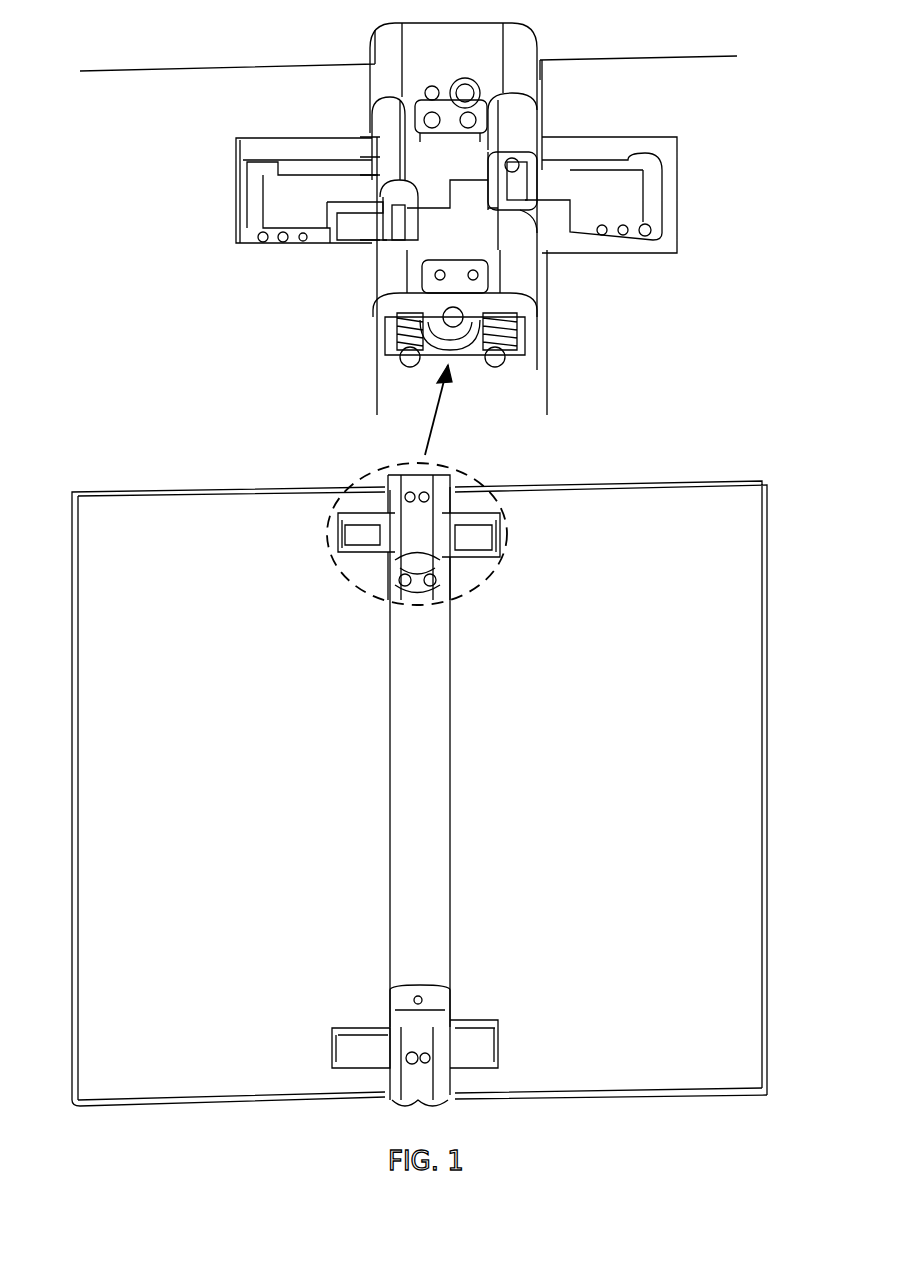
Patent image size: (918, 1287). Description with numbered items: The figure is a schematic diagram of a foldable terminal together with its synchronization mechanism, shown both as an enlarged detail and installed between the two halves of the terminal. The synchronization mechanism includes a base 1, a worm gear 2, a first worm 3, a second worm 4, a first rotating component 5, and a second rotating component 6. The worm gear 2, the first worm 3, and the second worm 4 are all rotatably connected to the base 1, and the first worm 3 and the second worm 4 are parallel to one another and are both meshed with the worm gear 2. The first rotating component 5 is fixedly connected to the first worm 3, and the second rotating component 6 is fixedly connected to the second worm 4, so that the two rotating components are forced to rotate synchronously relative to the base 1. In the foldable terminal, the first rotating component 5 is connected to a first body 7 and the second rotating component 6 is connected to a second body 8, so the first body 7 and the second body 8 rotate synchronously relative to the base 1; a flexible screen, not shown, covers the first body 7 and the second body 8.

The base 1 is at (450, 228).
The worm gear 2 is at (448, 332).
The first worm 3 is at (397, 330).
The second worm 4 is at (497, 327).
The first rotating component 5 is at (296, 203).
The second rotating component 6 is at (632, 190).
The first body 7 is at (200, 554).
The second body 8 is at (620, 550).